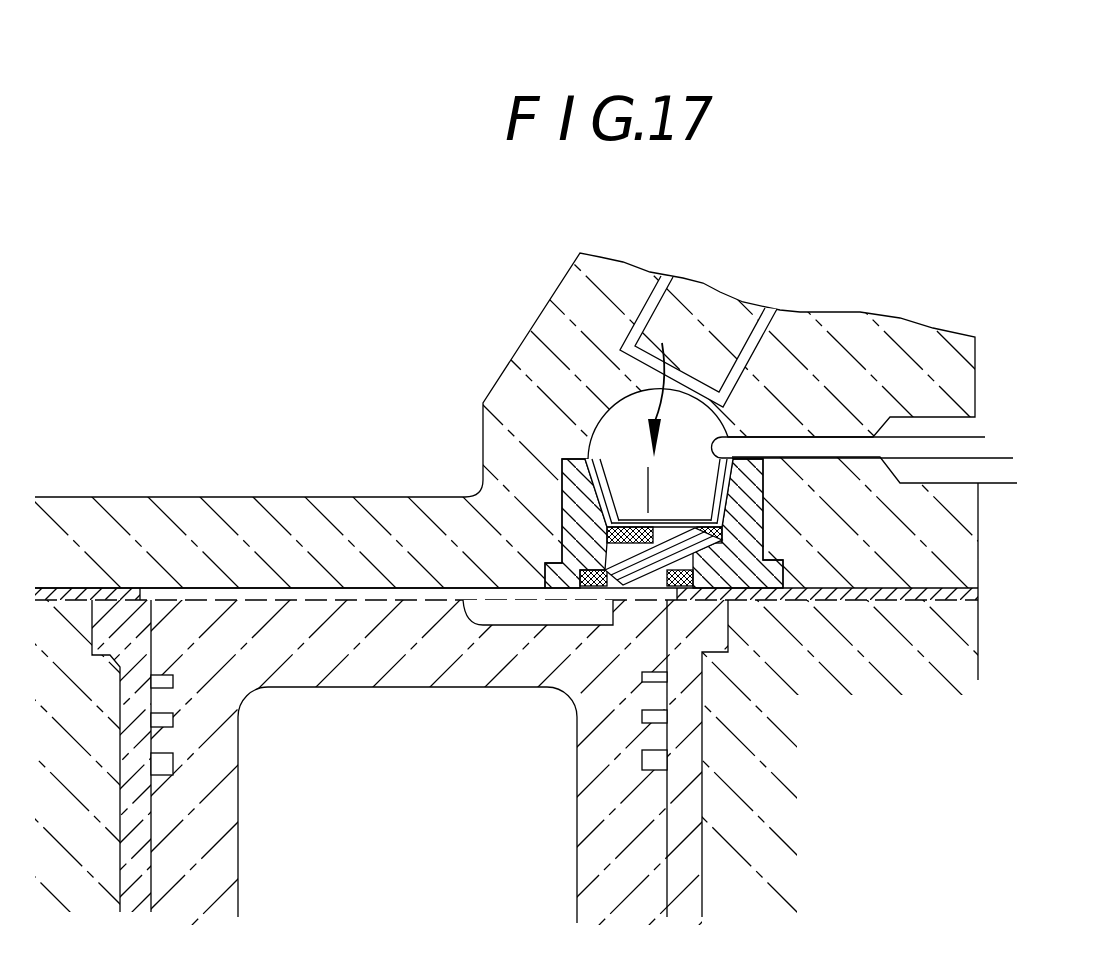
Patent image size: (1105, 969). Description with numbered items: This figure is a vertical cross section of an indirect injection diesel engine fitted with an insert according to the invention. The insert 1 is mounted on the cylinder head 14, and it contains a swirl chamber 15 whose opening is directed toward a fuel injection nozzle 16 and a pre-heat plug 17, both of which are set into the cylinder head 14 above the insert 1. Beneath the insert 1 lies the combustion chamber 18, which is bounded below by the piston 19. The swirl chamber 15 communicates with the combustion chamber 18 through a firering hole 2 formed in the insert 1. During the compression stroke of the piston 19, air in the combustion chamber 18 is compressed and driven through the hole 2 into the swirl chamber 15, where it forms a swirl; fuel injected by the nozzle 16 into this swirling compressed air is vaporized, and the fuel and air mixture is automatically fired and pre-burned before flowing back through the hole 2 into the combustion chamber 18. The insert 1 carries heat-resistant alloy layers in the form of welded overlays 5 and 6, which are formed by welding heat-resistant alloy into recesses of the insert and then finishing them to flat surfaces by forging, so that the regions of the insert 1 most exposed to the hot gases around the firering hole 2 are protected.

The insert 1 is at (661, 384).
The firering hole 2 is at (633, 575).
The welded overlay 5 is at (689, 583).
The welded overlay 6 is at (632, 522).
The cylinder head 14 is at (532, 367).
The swirl chamber 15 is at (690, 473).
The fuel injection nozzle 16 is at (713, 320).
The pre-heat plug 17 is at (981, 447).
The combustion chamber 18 is at (497, 613).
The piston 19 is at (318, 670).